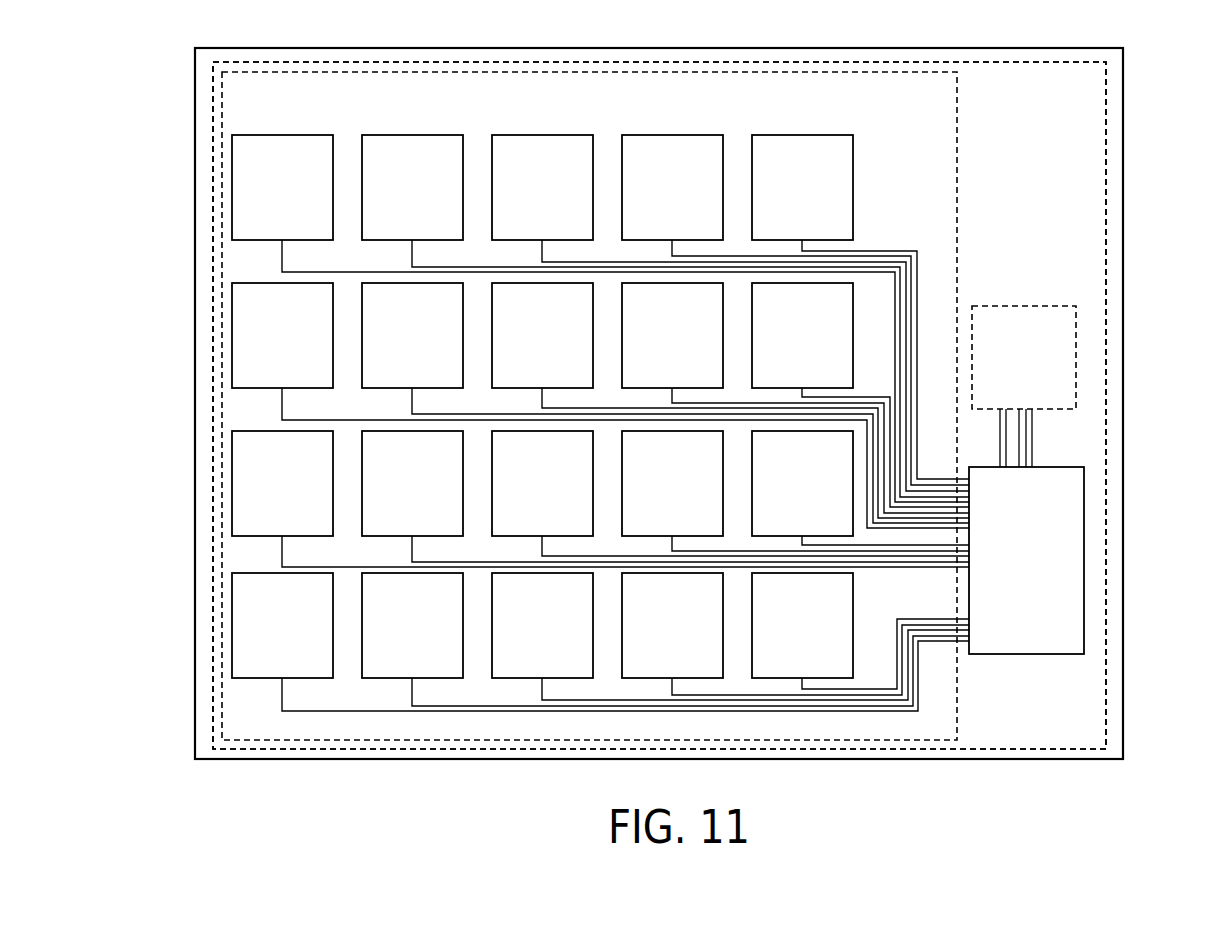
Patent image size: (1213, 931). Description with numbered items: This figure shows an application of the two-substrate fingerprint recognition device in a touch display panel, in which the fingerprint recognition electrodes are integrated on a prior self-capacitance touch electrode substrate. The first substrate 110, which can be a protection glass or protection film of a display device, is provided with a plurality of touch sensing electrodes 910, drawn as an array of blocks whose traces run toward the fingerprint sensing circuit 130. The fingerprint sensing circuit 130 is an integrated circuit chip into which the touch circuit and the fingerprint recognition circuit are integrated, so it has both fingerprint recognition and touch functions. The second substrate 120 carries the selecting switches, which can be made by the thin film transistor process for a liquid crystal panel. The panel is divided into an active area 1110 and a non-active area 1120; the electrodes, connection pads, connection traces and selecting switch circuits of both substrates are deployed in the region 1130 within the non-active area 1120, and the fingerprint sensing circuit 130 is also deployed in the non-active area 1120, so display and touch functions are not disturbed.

The first substrate 110 is at (1125, 222).
The second substrate 120 is at (1106, 322).
The fingerprint sensing circuit 130 is at (1085, 563).
The touch sensing electrodes 910 is at (283, 135).
The active area 1110 is at (957, 185).
The non-active area 1120 is at (1085, 125).
The region 1130 is at (1022, 306).